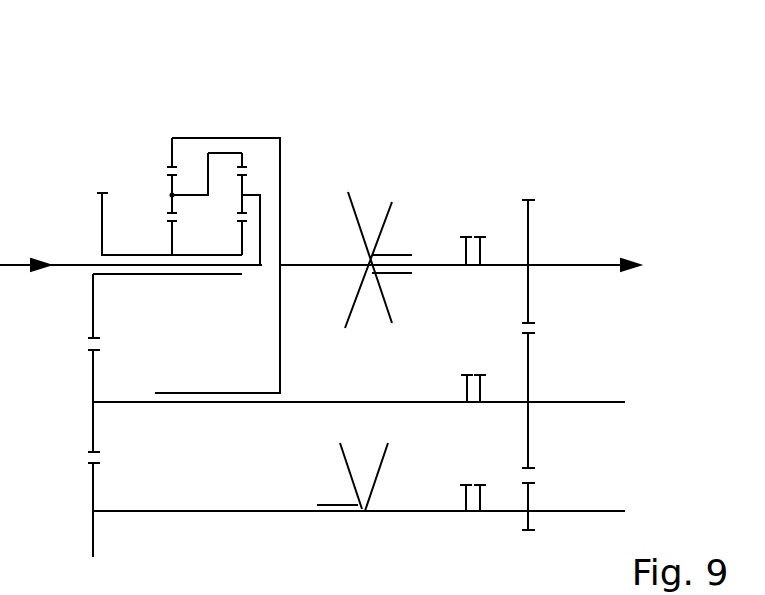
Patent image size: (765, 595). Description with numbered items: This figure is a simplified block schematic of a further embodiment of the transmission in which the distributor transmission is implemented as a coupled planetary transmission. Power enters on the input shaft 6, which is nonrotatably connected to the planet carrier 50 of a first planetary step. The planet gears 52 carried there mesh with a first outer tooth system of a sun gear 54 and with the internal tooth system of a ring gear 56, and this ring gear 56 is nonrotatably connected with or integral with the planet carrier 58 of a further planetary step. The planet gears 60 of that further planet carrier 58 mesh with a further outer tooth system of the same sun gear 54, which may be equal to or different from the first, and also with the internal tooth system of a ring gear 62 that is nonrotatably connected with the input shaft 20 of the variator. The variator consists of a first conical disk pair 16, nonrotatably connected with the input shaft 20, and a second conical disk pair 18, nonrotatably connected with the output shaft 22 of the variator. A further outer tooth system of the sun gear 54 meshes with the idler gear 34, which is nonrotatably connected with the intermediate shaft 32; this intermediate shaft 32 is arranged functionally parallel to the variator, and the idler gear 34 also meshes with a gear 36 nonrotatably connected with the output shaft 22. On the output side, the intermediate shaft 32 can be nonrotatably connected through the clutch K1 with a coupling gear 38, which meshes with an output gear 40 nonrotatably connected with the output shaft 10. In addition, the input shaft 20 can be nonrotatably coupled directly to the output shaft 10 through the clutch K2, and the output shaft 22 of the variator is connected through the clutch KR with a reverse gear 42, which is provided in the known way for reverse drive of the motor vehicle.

The input shaft 6 is at (53, 265).
The output shaft 10 is at (578, 262).
The first conical disk pair 16 is at (370, 208).
The second conical disk pair 18 is at (355, 518).
The input shaft of the variator 20 is at (442, 268).
The output shaft of the variator 22 is at (408, 510).
The intermediate shaft 32 is at (345, 402).
The idler gear 34 is at (92, 382).
The gear 36 is at (92, 530).
The coupling gear 38 is at (530, 443).
The output gear 40 is at (530, 303).
The reverse gear 42 is at (530, 500).
The planet carrier 50 is at (260, 203).
The planet gears 52 is at (243, 182).
The sun gear 54 is at (208, 255).
The ring gear 56 is at (222, 153).
The planet carrier 58 is at (192, 195).
The planet gears 60 is at (167, 193).
The ring gear 62 is at (212, 137).
The clutch K1 is at (471, 374).
The clutch K2 is at (471, 235).
The clutch KR is at (474, 483).